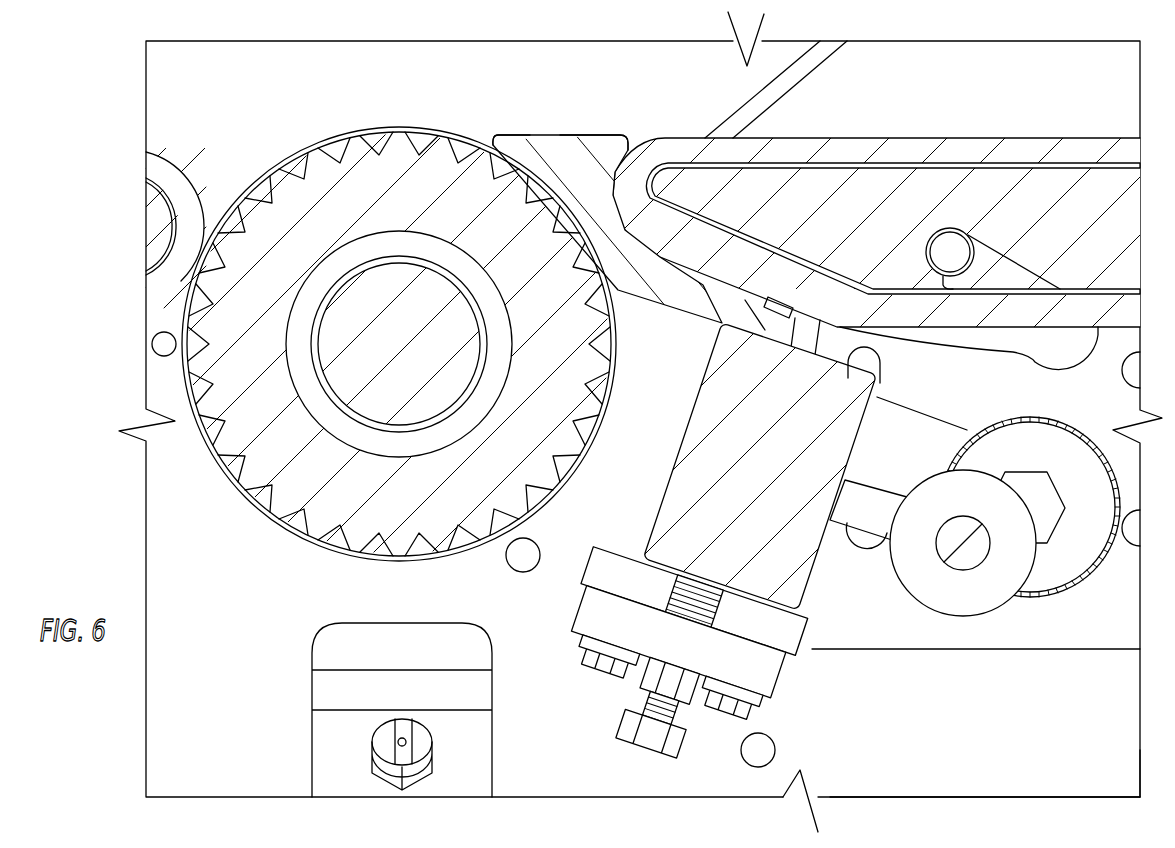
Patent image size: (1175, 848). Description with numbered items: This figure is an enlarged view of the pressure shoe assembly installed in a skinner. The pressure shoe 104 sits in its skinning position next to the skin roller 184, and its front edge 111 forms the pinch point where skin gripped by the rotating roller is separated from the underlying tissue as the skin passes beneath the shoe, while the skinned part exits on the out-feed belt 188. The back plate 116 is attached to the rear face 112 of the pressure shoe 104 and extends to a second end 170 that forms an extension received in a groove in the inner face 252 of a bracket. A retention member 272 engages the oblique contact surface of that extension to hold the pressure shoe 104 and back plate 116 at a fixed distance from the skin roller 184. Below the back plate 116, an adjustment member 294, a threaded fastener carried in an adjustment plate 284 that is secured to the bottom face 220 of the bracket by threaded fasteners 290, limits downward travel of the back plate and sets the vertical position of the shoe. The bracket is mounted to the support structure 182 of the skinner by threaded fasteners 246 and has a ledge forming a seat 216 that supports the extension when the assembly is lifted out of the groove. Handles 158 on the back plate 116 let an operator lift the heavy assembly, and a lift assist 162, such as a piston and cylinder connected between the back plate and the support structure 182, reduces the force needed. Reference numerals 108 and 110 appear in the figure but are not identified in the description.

The pressure shoe 104 is at (597, 122).
The pawl 108 is at (555, 135).
The ratchet gear 110 is at (584, 340).
The front edge 111 is at (492, 137).
The rear face 112 is at (680, 430).
The back plate 116 is at (822, 608).
The handles 158 is at (962, 616).
The lift assist element 162 is at (767, 323).
The second end 170 is at (810, 622).
The support structure 182 is at (993, 759).
The skin roller 184 is at (285, 118).
The out-feed belt 188 is at (853, 150).
The seat 216 is at (1053, 367).
The bottom face 220 is at (1035, 662).
The threaded fasteners 246 is at (872, 367).
The inner face 252 is at (915, 655).
The retention member 272 is at (937, 417).
The adjustment plate 284 is at (578, 603).
The threaded fasteners 290 is at (587, 670).
The adjustment member 294 is at (633, 743).